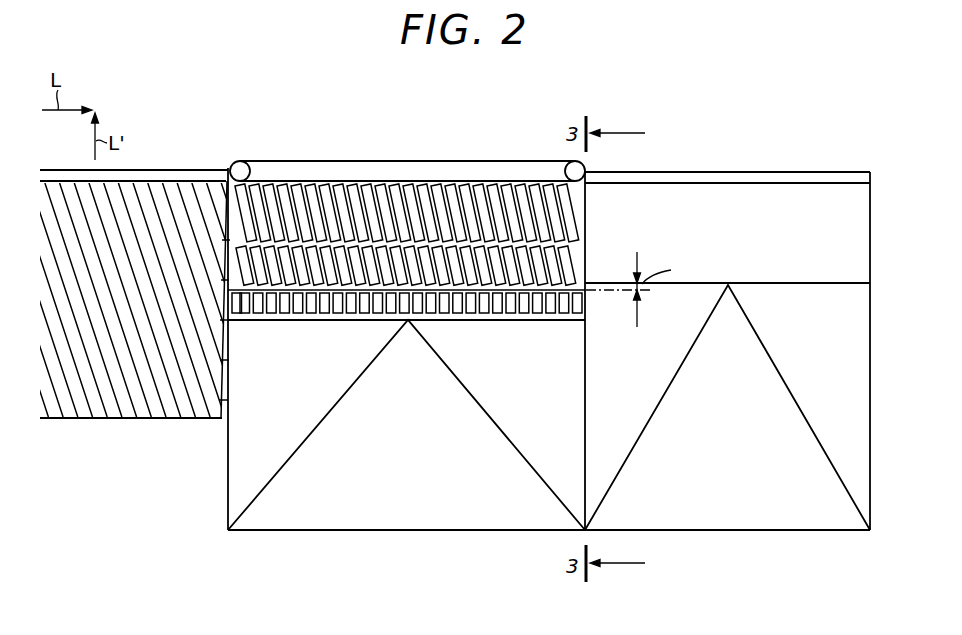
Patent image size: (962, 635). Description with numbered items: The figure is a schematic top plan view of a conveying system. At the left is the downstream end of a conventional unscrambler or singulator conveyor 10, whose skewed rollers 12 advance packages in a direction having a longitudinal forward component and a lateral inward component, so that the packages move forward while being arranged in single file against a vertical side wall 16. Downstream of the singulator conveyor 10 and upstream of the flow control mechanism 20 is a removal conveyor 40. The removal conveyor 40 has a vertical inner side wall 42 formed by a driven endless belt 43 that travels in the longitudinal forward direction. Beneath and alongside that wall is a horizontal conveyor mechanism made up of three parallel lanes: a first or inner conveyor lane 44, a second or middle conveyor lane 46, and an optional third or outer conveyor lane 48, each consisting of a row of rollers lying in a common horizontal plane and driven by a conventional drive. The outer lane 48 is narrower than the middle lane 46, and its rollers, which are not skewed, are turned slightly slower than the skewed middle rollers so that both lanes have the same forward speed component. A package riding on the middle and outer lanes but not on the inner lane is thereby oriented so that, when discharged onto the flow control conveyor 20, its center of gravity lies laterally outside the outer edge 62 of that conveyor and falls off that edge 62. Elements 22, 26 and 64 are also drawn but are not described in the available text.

The singulator conveyor 10 is at (186, 162).
The skewed rollers 12 is at (152, 196).
The vertical side wall 16 is at (210, 190).
The flow control mechanism 20 is at (817, 161).
The outfeed table top surface 22 is at (680, 196).
The table support frame 26 is at (850, 458).
The removal conveyor 40 is at (369, 152).
The vertical inner side wall 42 is at (445, 176).
The driven endless belt 43 is at (514, 151).
The first or inner conveyor lane 44 is at (599, 214).
The second or middle conveyor lane 46 is at (589, 262).
The third or outer conveyor lane 48 is at (545, 330).
The outer edge 62 is at (838, 285).
The reference level line 64 is at (645, 292).